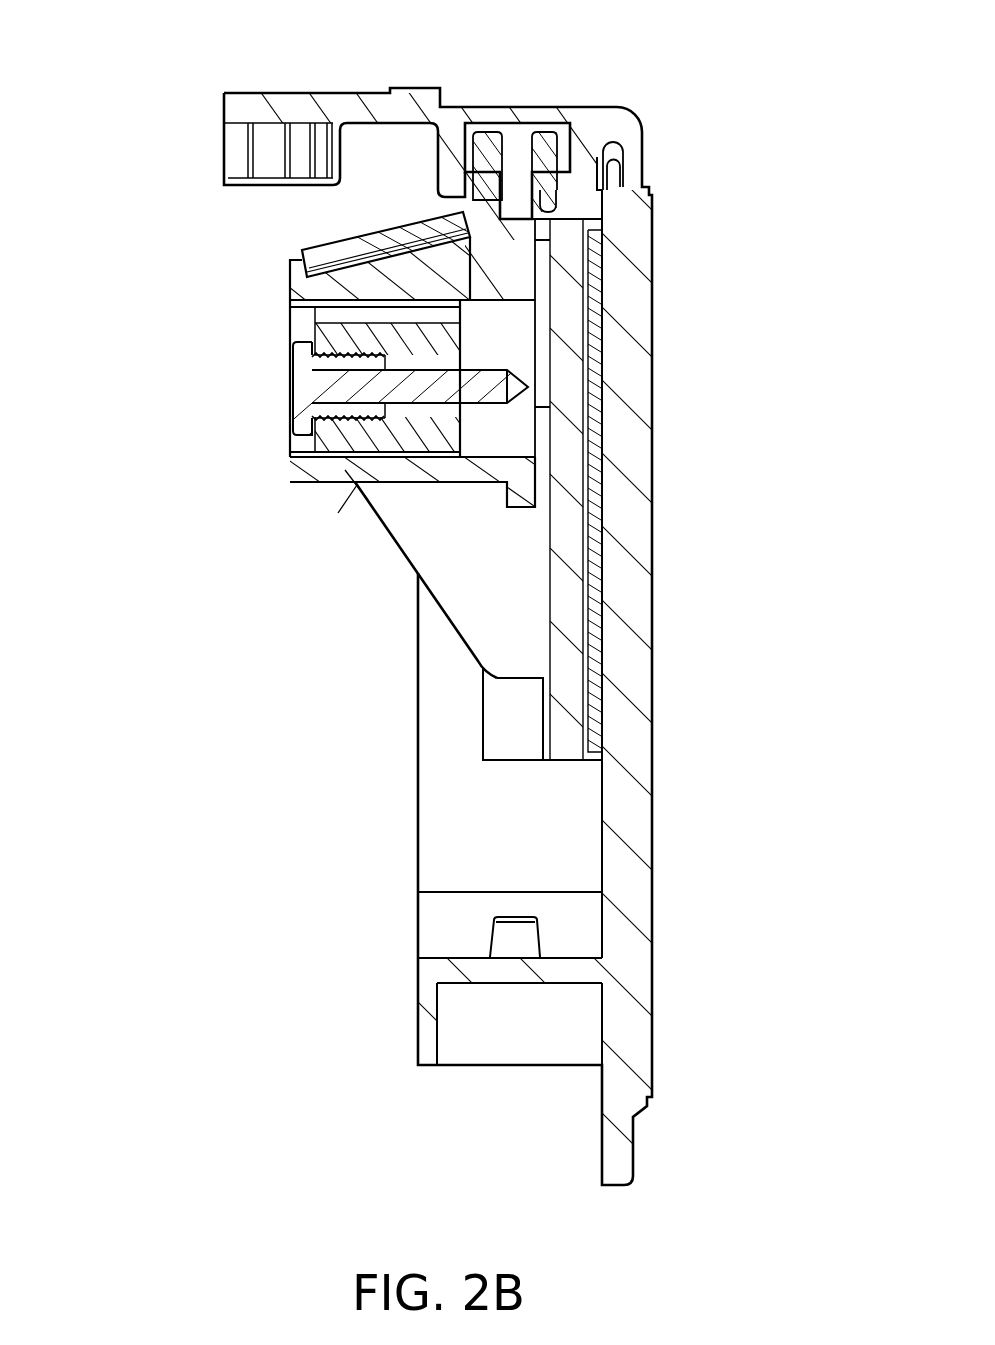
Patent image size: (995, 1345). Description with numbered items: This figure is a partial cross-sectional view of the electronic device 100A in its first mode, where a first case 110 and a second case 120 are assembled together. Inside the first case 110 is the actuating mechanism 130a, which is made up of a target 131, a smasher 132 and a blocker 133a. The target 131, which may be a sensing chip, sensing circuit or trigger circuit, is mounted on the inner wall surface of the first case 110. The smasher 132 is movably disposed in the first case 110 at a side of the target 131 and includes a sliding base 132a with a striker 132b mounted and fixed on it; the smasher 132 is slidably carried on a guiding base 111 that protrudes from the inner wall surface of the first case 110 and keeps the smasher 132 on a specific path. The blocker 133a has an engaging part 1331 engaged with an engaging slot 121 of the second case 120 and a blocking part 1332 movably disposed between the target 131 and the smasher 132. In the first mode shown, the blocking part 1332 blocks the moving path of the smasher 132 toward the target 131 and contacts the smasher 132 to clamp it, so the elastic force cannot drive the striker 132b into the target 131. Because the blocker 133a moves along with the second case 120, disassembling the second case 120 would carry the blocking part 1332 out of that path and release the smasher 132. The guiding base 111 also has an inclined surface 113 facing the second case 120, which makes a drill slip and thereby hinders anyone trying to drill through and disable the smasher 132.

The electronic device 100A is at (446, 672).
The first case 110 is at (645, 733).
The guiding base 111 is at (292, 472).
The inclined surface 113 is at (347, 237).
The second case 120 is at (420, 100).
The engaging slot 121 is at (523, 127).
The actuating mechanism 130a is at (341, 387).
The target 131 is at (590, 390).
The smasher 132 is at (347, 420).
The sliding base 132a is at (288, 323).
The striker 132b is at (422, 393).
The blocker 133a is at (636, 288).
The engaging part 1331 is at (555, 158).
The blocking part 1332 is at (542, 377).